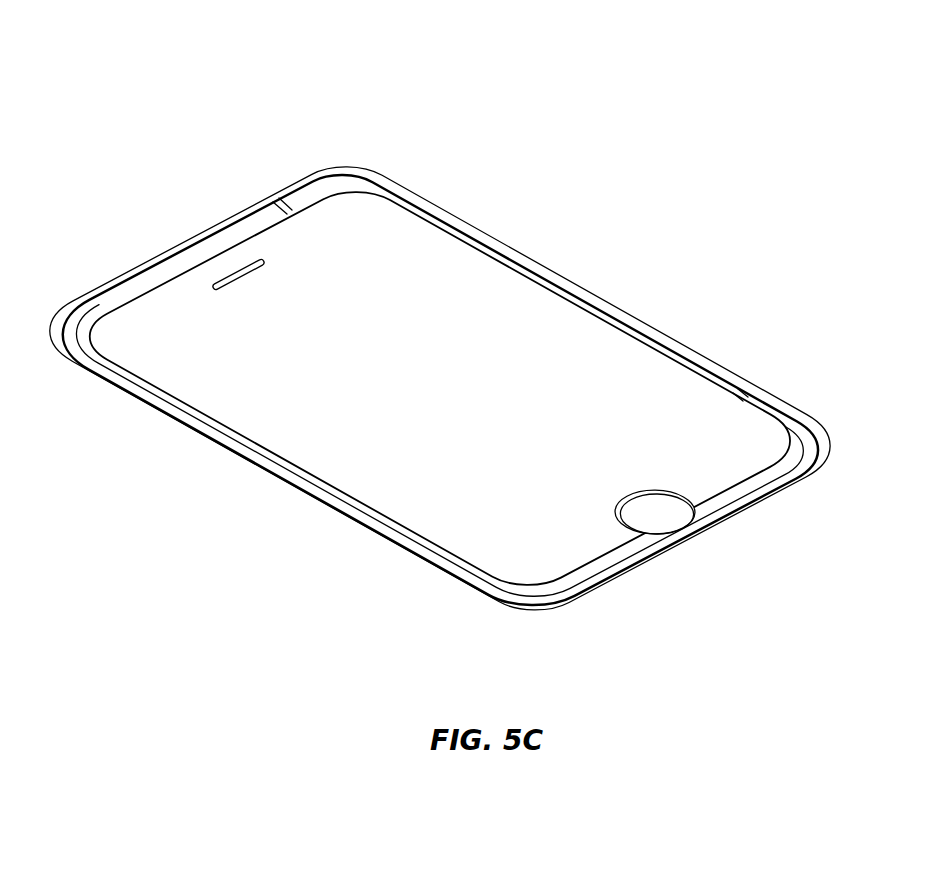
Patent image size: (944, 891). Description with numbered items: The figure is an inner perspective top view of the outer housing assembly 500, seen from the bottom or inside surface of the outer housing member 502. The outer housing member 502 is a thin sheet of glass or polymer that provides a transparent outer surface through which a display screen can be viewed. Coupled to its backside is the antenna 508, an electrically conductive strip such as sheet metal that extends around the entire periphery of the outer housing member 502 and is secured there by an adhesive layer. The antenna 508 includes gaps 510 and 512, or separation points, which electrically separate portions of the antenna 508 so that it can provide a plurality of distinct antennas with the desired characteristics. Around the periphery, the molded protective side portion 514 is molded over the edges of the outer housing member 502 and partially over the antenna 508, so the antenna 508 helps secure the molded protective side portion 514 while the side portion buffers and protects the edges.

The outer housing assembly 500 is at (505, 100).
The outer housing member 502 is at (417, 382).
The antenna 508 is at (98, 315).
The gap 510 is at (281, 207).
The gap 512 is at (737, 393).
The molded protective side portion 514 is at (592, 290).